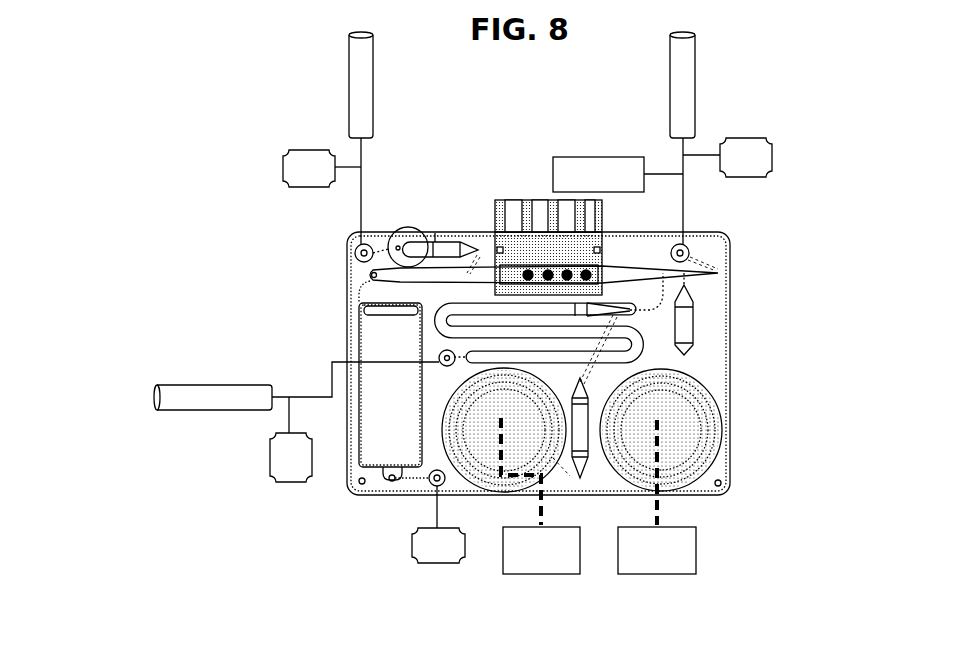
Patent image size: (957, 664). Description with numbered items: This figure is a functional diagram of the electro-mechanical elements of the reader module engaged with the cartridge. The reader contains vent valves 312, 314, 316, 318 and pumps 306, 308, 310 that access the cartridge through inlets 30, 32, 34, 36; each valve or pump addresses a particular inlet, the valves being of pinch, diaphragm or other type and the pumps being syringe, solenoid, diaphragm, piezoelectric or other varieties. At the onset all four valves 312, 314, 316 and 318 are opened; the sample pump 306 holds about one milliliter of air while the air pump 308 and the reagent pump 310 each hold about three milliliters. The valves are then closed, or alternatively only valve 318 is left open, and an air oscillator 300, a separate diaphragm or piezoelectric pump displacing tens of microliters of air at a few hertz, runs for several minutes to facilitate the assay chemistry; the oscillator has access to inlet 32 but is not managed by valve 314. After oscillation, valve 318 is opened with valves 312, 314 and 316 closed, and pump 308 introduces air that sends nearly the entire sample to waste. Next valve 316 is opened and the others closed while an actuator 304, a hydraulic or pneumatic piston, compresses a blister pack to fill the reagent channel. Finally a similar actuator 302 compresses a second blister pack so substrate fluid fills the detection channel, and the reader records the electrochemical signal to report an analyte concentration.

The inlet 30 is at (356, 257).
The inlet 32 is at (688, 256).
The inlet 34 is at (437, 352).
The inlet 36 is at (432, 483).
The air oscillator 300 is at (580, 172).
The actuator 302 is at (670, 551).
The actuator 304 is at (540, 551).
The sample pump 306 is at (358, 90).
The air pump 308 is at (683, 80).
The reagent pump 310 is at (245, 395).
The vent valve 312 is at (305, 172).
The vent valve 314 is at (747, 162).
The vent valve 316 is at (297, 457).
The vent valve 318 is at (438, 550).